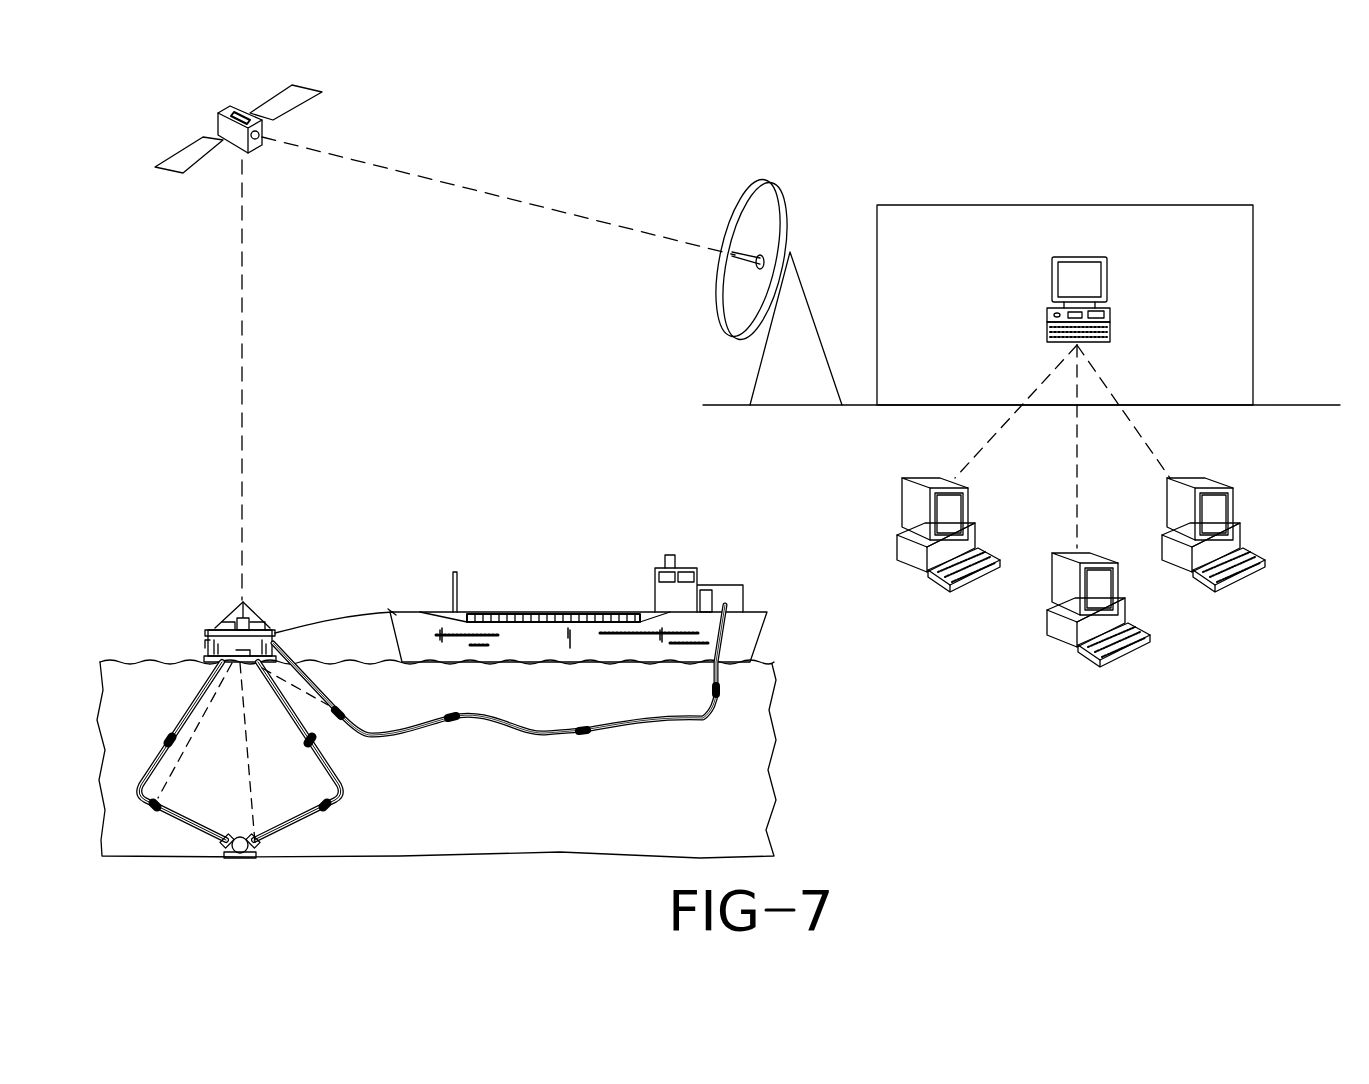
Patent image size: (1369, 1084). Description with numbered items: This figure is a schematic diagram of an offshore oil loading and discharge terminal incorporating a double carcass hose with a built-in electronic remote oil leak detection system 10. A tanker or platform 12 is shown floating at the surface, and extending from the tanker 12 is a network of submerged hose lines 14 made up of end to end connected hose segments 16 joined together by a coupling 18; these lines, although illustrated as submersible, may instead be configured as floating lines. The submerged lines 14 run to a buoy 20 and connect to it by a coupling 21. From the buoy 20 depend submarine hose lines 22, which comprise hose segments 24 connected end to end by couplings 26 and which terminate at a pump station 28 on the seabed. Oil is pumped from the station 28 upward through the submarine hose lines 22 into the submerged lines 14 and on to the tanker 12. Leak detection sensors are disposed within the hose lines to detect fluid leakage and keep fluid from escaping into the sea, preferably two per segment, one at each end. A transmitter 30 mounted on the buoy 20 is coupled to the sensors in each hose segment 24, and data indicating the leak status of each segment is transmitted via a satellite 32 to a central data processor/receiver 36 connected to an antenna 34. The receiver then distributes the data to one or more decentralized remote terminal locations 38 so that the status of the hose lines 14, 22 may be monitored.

The leak detection system 10 is at (638, 188).
The tanker or platform 12 is at (762, 600).
The submerged hose lines 14 is at (703, 720).
The hose segments 16 is at (635, 722).
The coupling 18 is at (453, 720).
The buoy 20 is at (220, 647).
The coupling 21 is at (262, 635).
The submarine hose lines 22 is at (145, 788).
The hose segments 24 is at (342, 790).
The couplings 26 is at (155, 812).
The pump station 28 is at (242, 852).
The transmitter 30 is at (241, 620).
The satellite 32 is at (228, 124).
The antenna 34 is at (782, 196).
The central data processor/receiver 36 is at (1085, 285).
The remote terminal locations 38 is at (972, 572).